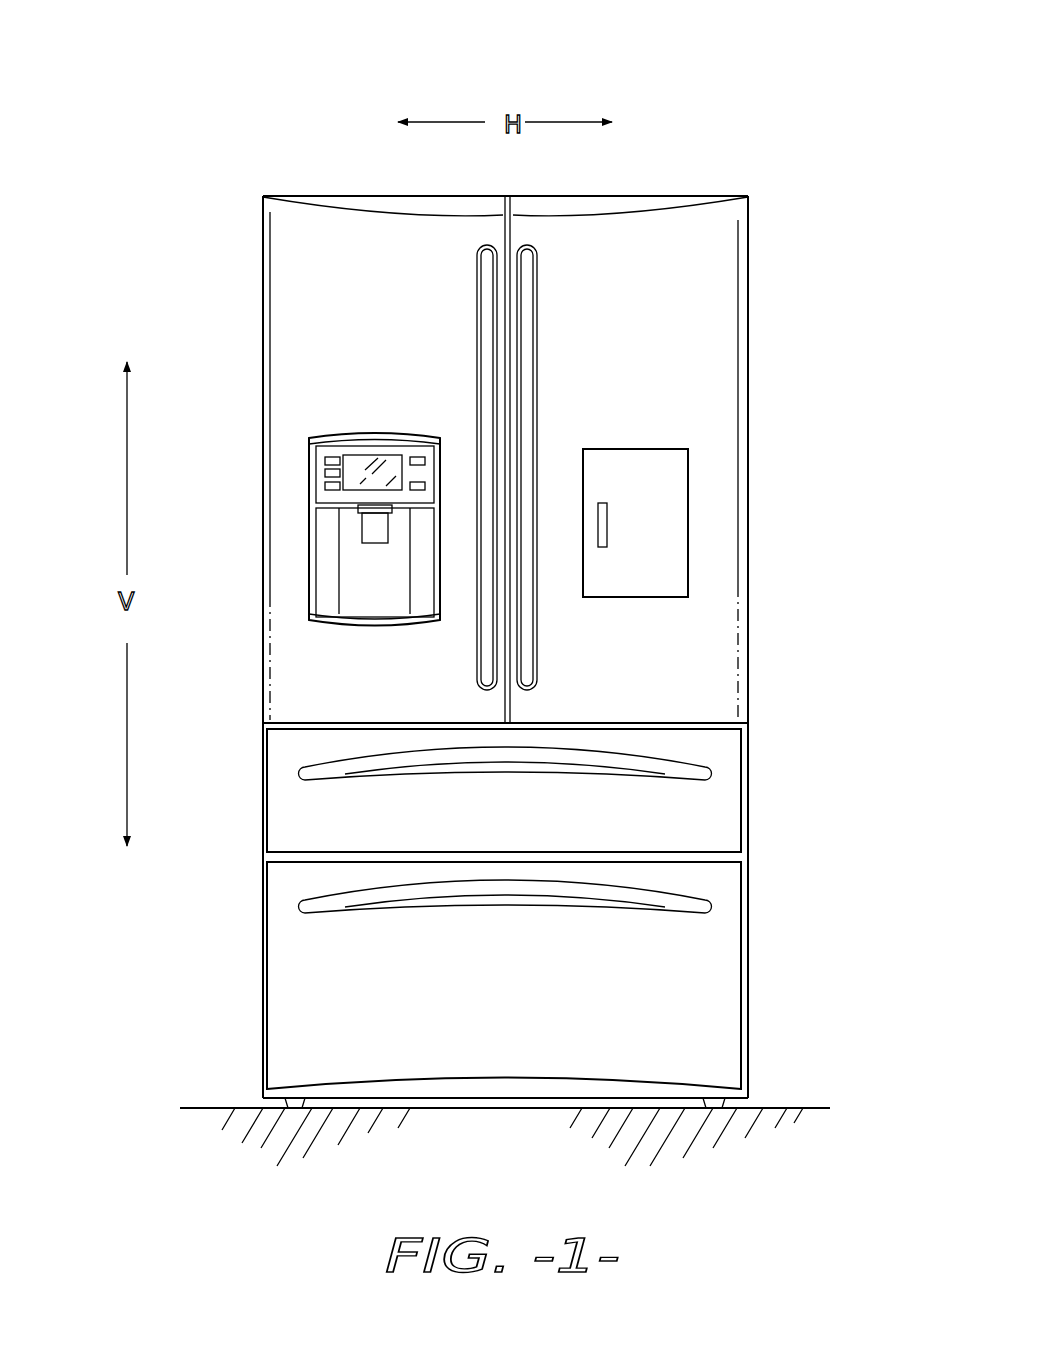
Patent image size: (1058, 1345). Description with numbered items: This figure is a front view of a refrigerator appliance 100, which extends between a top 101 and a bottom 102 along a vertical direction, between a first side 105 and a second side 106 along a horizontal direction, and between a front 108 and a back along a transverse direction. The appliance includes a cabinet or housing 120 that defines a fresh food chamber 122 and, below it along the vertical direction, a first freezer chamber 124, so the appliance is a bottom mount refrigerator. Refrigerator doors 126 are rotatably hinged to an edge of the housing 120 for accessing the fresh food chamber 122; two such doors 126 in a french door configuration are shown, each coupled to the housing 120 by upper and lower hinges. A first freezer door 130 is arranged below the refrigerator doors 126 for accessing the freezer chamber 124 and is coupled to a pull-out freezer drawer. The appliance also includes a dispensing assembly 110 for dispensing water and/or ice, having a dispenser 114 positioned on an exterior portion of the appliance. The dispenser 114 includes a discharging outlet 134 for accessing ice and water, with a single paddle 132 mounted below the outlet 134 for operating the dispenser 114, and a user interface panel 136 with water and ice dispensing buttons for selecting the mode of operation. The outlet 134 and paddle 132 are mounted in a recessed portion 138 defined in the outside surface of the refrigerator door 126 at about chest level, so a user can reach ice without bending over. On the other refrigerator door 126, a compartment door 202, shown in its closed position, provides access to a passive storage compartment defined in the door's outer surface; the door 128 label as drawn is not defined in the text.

The refrigerator appliance 100 is at (504, 587).
The top 101 is at (756, 195).
The bottom 102 is at (755, 1095).
The first side 105 is at (264, 186).
The second side 106 is at (745, 186).
The front 108 is at (718, 490).
The dispensing assembly 110 is at (309, 528).
The dispenser 114 is at (367, 582).
The cabinet or housing 120 is at (262, 924).
The fresh food chamber 122 is at (712, 417).
The first freezer chamber 124 is at (706, 805).
The refrigerator doors 126 is at (293, 297).
The right refrigerator door 128 is at (720, 338).
The first freezer door 130 is at (705, 987).
The paddle 132 is at (371, 519).
The discharging outlet 134 is at (365, 541).
The user interface panel 136 is at (316, 487).
The recessed portion 138 is at (391, 600).
The compartment door 202 is at (636, 569).